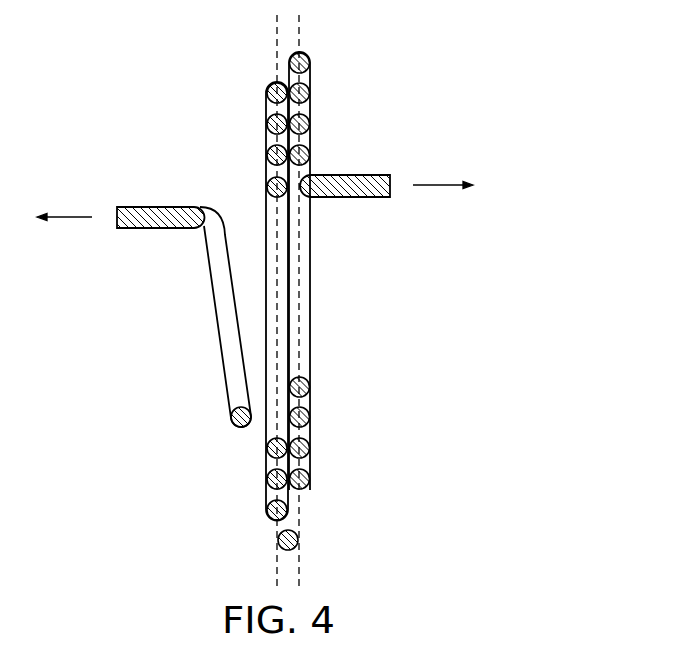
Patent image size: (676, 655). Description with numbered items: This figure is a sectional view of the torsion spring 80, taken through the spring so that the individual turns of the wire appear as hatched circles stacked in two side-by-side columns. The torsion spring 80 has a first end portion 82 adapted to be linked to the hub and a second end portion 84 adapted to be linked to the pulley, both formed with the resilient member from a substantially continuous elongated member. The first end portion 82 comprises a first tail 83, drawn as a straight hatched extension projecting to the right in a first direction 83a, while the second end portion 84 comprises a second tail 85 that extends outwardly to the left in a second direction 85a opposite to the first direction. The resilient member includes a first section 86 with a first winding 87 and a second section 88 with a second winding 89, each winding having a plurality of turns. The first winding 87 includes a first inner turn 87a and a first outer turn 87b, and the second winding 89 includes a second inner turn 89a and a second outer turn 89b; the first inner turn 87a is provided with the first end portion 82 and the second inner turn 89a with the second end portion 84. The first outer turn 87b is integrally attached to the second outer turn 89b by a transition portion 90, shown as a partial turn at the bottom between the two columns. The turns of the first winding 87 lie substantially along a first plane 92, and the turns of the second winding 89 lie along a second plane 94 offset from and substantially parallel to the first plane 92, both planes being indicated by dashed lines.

The torsion spring 80 is at (502, 84).
The first end portion 82 is at (377, 164).
The first tail 83 is at (360, 197).
The first direction 83a is at (438, 185).
The second end portion 84 is at (143, 184).
The second tail 85 is at (138, 229).
The second direction 85a is at (68, 217).
The first section 86 is at (335, 66).
The first winding 87 is at (324, 138).
The first inner turn 87a is at (309, 392).
The first outer turn 87b is at (309, 484).
The second section 88 is at (245, 106).
The second winding 89 is at (240, 146).
The second inner turn 89a is at (270, 182).
The second outer turn 89b is at (273, 87).
The transition portion 90 is at (298, 540).
The first plane 92 is at (300, 569).
The second plane 94 is at (275, 569).